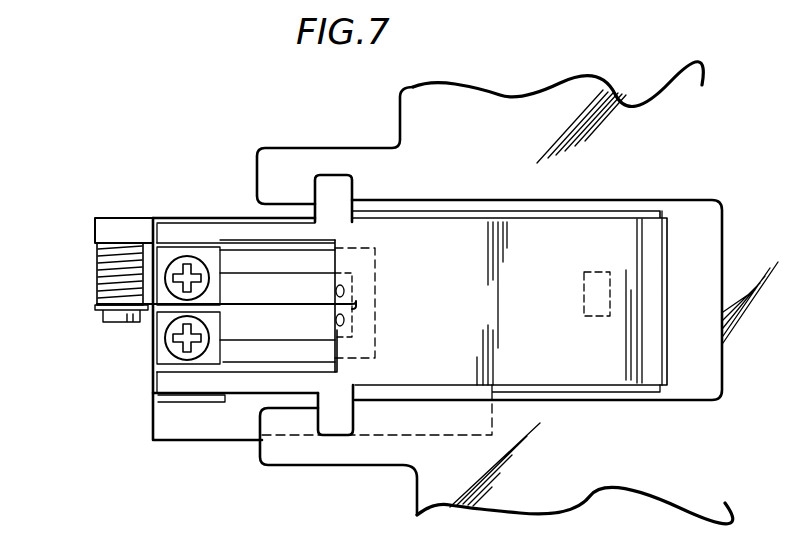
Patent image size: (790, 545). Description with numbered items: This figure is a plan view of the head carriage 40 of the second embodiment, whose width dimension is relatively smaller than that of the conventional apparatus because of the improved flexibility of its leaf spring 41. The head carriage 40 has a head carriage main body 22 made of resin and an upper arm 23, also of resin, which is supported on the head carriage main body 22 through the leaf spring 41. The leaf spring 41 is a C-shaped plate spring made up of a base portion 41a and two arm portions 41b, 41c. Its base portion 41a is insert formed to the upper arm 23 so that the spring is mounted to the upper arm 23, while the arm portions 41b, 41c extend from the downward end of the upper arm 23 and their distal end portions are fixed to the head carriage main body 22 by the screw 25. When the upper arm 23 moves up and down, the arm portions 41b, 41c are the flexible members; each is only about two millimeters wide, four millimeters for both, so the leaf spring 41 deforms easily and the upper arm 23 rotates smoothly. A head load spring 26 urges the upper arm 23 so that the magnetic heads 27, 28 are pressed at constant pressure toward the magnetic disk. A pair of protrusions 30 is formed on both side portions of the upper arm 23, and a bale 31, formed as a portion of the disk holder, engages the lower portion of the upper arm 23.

The head carriage main body 22 is at (218, 412).
The upper arm 23 is at (533, 238).
The screw 25 is at (168, 290).
The head load spring 26 is at (98, 263).
The magnetic head 27 is at (628, 229).
The magnetic head 28 is at (600, 270).
The protrusion 30 is at (338, 194).
The bale 31 is at (279, 156).
The head carriage 40 is at (143, 378).
The leaf spring 41 is at (284, 343).
The base portion 41a is at (375, 287).
The arm portion 41b is at (263, 262).
The arm portion 41c is at (254, 352).